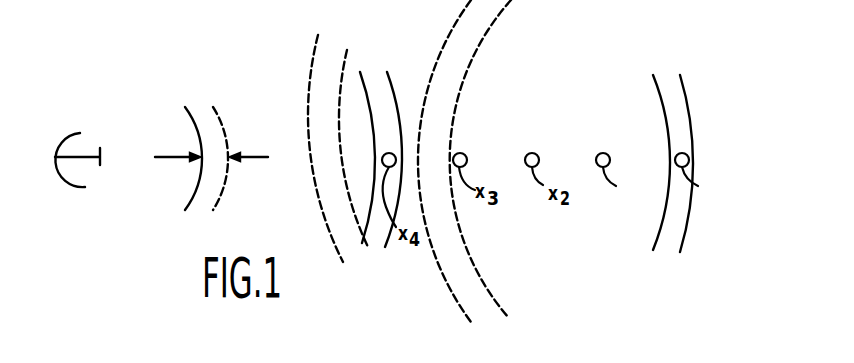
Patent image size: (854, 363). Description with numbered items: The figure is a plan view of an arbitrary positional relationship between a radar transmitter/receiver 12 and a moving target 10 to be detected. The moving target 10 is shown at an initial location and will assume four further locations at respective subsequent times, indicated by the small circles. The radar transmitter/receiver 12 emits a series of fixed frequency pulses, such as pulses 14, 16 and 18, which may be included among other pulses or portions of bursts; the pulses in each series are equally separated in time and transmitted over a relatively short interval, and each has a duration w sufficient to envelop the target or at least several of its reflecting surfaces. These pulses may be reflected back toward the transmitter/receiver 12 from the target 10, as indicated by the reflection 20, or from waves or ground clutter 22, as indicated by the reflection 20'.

The moving target 10 is at (690, 156).
The radar transmitter/receiver 12 is at (72, 134).
The fixed frequency pulse 14 is at (690, 103).
The fixed frequency pulse 16 is at (398, 100).
The fixed frequency pulse 18 is at (226, 128).
The reflection from target 20 is at (464, 161).
The reflection from clutter 20' is at (372, 130).
The waves or ground clutter 22 is at (625, 132).